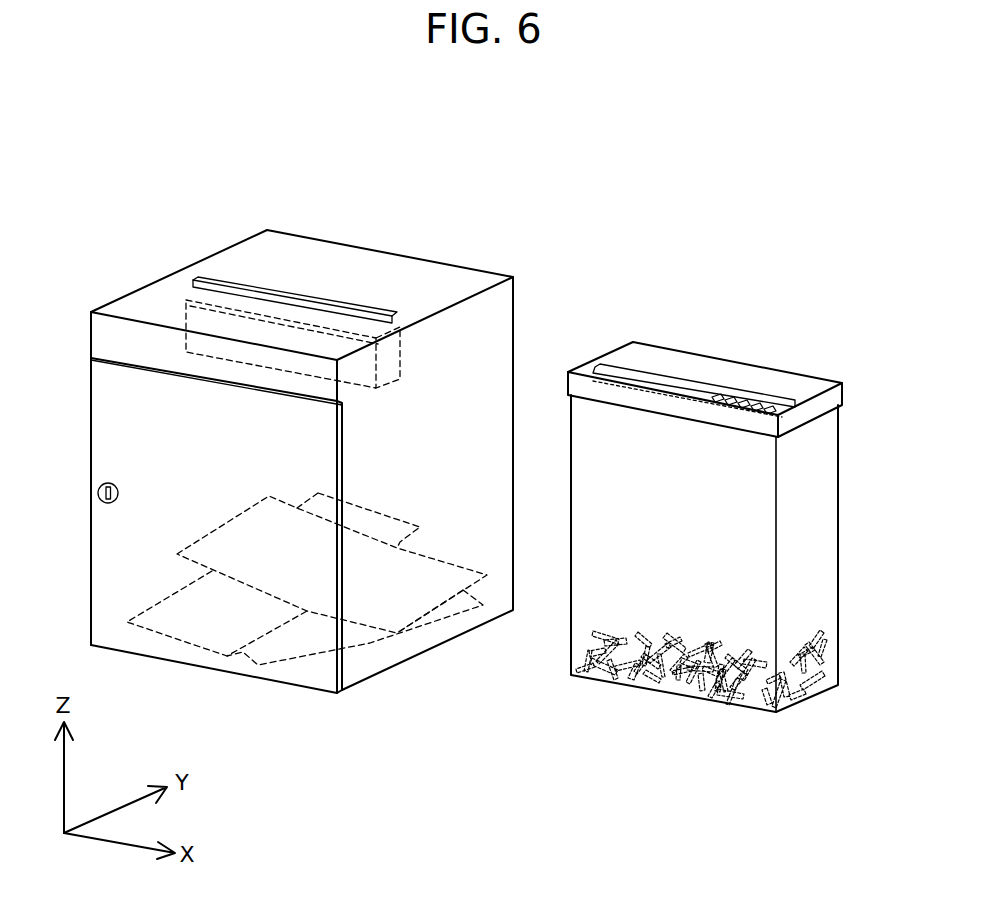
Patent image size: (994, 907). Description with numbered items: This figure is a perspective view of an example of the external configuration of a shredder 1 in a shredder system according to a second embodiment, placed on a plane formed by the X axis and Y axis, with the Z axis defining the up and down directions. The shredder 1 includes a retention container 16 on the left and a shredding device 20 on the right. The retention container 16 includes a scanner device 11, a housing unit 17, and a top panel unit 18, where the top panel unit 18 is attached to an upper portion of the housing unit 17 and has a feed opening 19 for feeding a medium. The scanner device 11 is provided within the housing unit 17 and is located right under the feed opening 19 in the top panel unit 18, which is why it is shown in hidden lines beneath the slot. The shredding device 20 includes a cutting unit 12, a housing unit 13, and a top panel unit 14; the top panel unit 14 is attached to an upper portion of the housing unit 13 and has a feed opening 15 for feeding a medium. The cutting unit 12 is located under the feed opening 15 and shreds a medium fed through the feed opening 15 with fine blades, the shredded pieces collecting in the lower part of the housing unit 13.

The shredder 1 is at (578, 152).
The scanner device 11 is at (197, 323).
The cutting unit 12 is at (783, 428).
The housing unit 13 is at (838, 510).
The top panel unit 14 is at (797, 382).
The feed opening 15 is at (613, 367).
The retention container 16 is at (425, 682).
The housing unit 17 is at (90, 333).
The top panel unit 18 is at (307, 257).
The feed opening 19 is at (217, 283).
The shredding device 20 is at (857, 577).